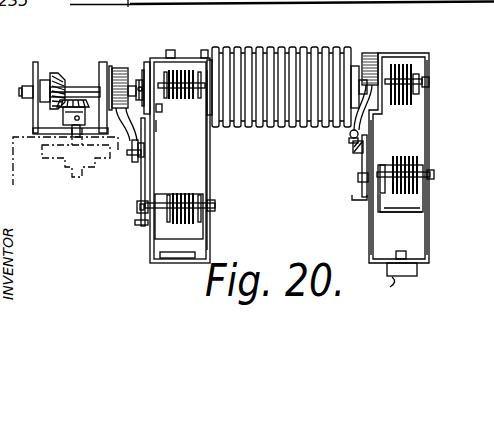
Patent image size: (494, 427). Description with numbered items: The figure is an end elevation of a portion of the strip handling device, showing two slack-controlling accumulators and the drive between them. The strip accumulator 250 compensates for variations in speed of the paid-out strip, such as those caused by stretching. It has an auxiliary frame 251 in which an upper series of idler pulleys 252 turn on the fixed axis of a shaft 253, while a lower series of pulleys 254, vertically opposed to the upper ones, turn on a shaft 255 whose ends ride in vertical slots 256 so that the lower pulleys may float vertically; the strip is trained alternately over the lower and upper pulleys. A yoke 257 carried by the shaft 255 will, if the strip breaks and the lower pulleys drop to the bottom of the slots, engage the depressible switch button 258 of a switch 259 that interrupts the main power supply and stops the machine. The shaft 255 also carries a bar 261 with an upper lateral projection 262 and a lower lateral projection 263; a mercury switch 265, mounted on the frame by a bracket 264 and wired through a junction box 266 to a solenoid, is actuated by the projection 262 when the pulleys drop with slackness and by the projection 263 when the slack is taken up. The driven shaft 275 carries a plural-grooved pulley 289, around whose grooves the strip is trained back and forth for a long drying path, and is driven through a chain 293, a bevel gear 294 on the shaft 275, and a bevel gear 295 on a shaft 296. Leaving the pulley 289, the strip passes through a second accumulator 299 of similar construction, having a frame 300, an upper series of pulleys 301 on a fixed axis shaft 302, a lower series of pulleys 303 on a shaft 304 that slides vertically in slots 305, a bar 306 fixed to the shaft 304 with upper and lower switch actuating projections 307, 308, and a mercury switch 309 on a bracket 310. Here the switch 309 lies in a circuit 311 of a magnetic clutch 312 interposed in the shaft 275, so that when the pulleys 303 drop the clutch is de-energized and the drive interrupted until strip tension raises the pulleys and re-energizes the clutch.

The strip accumulator 250 is at (438, 113).
The auxiliary frame 251 is at (427, 152).
The upper series of idler pulleys 252 is at (396, 64).
The shaft 253 is at (430, 81).
The lower series of pulleys 254 is at (408, 156).
The shaft 255 is at (434, 174).
The vertical slots 256 is at (430, 137).
The yoke 257 is at (413, 218).
The depressible switch button 258 is at (402, 250).
The switch 259 is at (418, 272).
The bar 261 is at (358, 176).
The upper lateral projection 262 is at (349, 135).
The lower lateral projection 263 is at (352, 196).
The bracket 264 is at (353, 150).
The mercury switch 265 is at (350, 141).
The junction box 266 is at (372, 53).
The driven shaft 275 is at (82, 87).
The second plural-grooved pulley 289 is at (311, 35).
The chain 293 is at (149, 62).
The bevel gear 294 is at (58, 75).
The bevel gear 295 is at (66, 111).
The shaft 296 is at (72, 176).
The second accumulator 299 is at (215, 183).
The frame 300 is at (208, 147).
The upper series of pulleys 301 is at (174, 70).
The fixed axis shaft 302 is at (213, 58).
The lower series of pulleys 303 is at (188, 193).
The shaft 304 is at (212, 205).
The slots 305 is at (209, 171).
The bar 306 is at (141, 192).
The upper switch actuating projection 307 is at (150, 130).
The lower switch actuating projection 308 is at (136, 222).
The mercury switch 309 is at (130, 157).
The bracket 310 is at (135, 162).
The circuit 311 is at (150, 112).
The magnetic clutch 312 is at (123, 67).